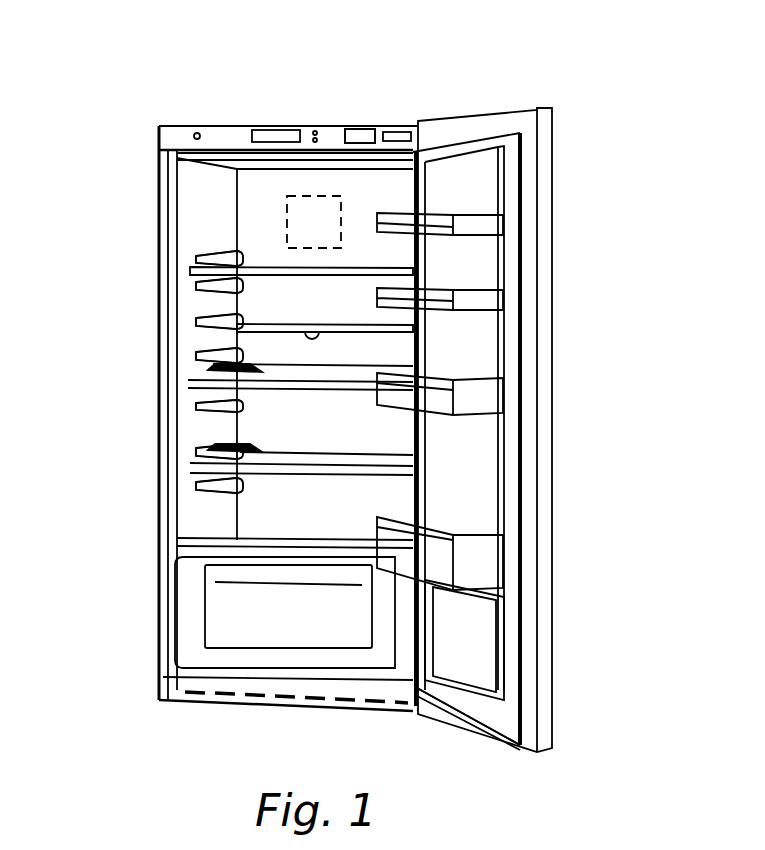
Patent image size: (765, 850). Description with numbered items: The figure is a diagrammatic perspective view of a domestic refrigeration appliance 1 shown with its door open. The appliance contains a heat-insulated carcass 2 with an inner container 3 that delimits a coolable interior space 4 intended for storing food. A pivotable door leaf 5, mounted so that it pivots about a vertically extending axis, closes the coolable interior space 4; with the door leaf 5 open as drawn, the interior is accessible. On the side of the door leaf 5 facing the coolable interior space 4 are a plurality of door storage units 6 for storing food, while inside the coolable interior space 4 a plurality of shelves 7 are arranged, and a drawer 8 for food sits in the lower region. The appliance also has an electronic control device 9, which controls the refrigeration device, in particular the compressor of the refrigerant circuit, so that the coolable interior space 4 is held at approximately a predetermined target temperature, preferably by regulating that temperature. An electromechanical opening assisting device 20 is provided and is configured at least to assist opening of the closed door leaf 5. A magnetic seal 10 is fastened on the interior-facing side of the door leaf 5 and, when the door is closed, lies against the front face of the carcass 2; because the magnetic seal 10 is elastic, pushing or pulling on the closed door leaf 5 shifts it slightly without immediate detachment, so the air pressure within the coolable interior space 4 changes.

The domestic refrigeration appliance 1 is at (346, 382).
The heat-insulated carcass 2 is at (160, 680).
The inner container 3 is at (180, 545).
The coolable interior space 4 is at (248, 212).
The door leaf 5 is at (542, 660).
The door storage units 6 is at (492, 565).
The shelves 7 is at (240, 536).
The drawer 8 is at (293, 632).
The electronic control device 9 is at (322, 237).
The magnetic seal 10 is at (463, 703).
The electromechanical opening assisting device 20 is at (358, 129).